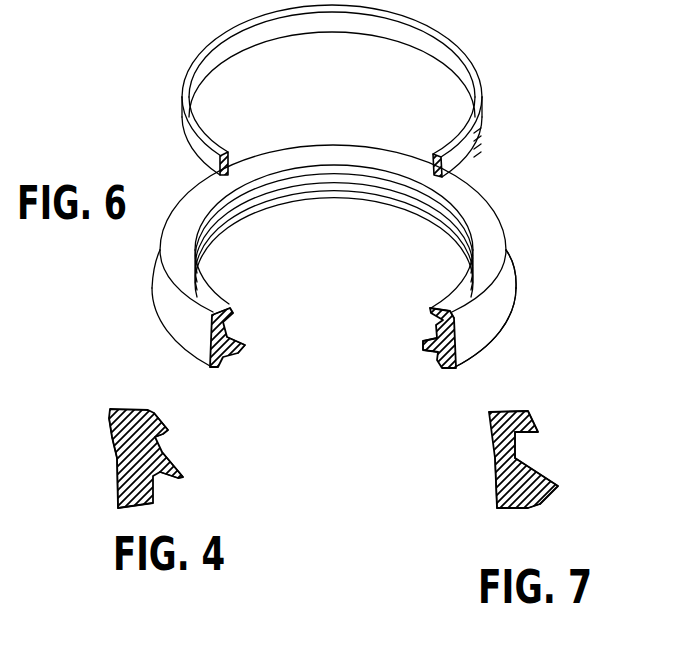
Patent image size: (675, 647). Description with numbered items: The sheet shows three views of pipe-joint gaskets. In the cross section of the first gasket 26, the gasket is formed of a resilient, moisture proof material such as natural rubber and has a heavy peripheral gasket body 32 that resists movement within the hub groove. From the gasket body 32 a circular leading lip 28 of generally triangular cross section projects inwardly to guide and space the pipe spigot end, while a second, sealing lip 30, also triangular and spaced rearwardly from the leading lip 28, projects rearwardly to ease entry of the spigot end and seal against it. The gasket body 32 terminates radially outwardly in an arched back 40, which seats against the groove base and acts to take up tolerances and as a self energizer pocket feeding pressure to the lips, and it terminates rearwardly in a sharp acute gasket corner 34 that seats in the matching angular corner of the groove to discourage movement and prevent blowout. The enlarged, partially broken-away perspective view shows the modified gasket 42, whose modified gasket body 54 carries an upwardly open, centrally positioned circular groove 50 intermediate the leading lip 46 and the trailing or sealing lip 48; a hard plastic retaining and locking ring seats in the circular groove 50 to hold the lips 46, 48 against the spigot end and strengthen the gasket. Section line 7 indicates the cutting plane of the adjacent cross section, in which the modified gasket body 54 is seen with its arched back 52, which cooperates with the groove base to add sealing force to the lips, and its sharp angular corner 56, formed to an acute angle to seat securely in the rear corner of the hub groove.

In FIG. 6, the section line 7— 7 is at (198, 113).
In FIG. 4, the gasket 26 is at (122, 402).
In FIG. 4, the leading lip 28 is at (160, 418).
In FIG. 4, the sealing lip 30 is at (175, 468).
In FIG. 4, the gasket body 32 is at (118, 460).
In FIG. 4, the gasket corner 34 is at (116, 506).
In FIG. 4, the arched back 40 is at (115, 437).
In FIG. 6, the modified gasket 42 is at (485, 222).
In FIG. 7, the modified gasket 42 is at (492, 460).
In FIG. 6, the leading lip 46 is at (433, 310).
In FIG. 7, the leading lip 46 is at (535, 418).
In FIG. 6, the sealing lip 48 is at (238, 345).
In FIG. 7, the sealing lip 48 is at (555, 478).
In FIG. 6, the circular groove 50 is at (232, 156).
In FIG. 7, the circular groove 50 is at (522, 447).
In FIG. 6, the arched back 52 is at (470, 330).
In FIG. 6, the modified gasket body 54 is at (480, 273).
In FIG. 7, the modified gasket body 54 is at (530, 505).
In FIG. 6, the angular corner 56 is at (212, 370).
In FIG. 7, the angular corner 56 is at (497, 508).